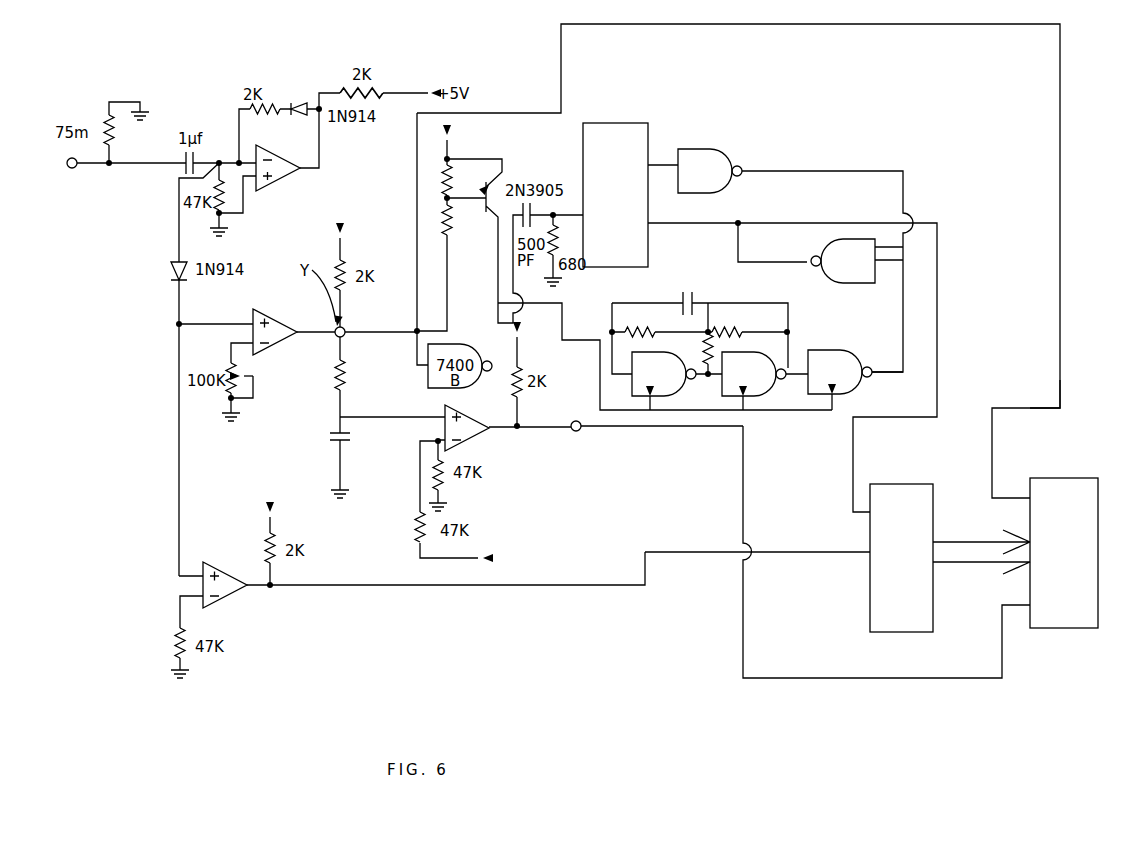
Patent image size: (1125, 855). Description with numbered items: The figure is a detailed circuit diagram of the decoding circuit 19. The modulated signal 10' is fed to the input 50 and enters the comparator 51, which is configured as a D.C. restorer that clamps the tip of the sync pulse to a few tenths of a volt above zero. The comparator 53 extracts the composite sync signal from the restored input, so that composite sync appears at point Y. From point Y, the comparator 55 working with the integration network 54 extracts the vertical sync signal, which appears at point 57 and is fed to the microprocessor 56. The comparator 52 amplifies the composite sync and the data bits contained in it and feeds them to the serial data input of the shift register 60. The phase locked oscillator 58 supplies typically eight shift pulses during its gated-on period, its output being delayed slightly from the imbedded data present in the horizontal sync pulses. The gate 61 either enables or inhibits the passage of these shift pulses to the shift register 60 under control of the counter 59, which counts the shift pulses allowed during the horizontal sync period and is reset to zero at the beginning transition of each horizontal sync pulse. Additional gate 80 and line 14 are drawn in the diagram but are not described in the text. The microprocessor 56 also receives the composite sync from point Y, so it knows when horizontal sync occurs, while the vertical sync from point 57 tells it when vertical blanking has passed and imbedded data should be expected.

The input 50 is at (66, 163).
The modulated signal 10' is at (114, 184).
The comparator 51 is at (301, 174).
The comparator 52 is at (226, 558).
The comparator 53 is at (240, 336).
The integration network 54 is at (322, 441).
The comparator 55 is at (409, 460).
The microprocessor 56 is at (1080, 565).
The point 57 is at (577, 437).
The phase locked oscillator 58 is at (767, 421).
The counter 59 is at (598, 122).
The shift register 60 is at (884, 478).
The gate 61 is at (838, 290).
The NAND gate 80 is at (664, 157).
The decoding circuit 19 is at (1078, 406).
The clock line 14 is at (809, 398).